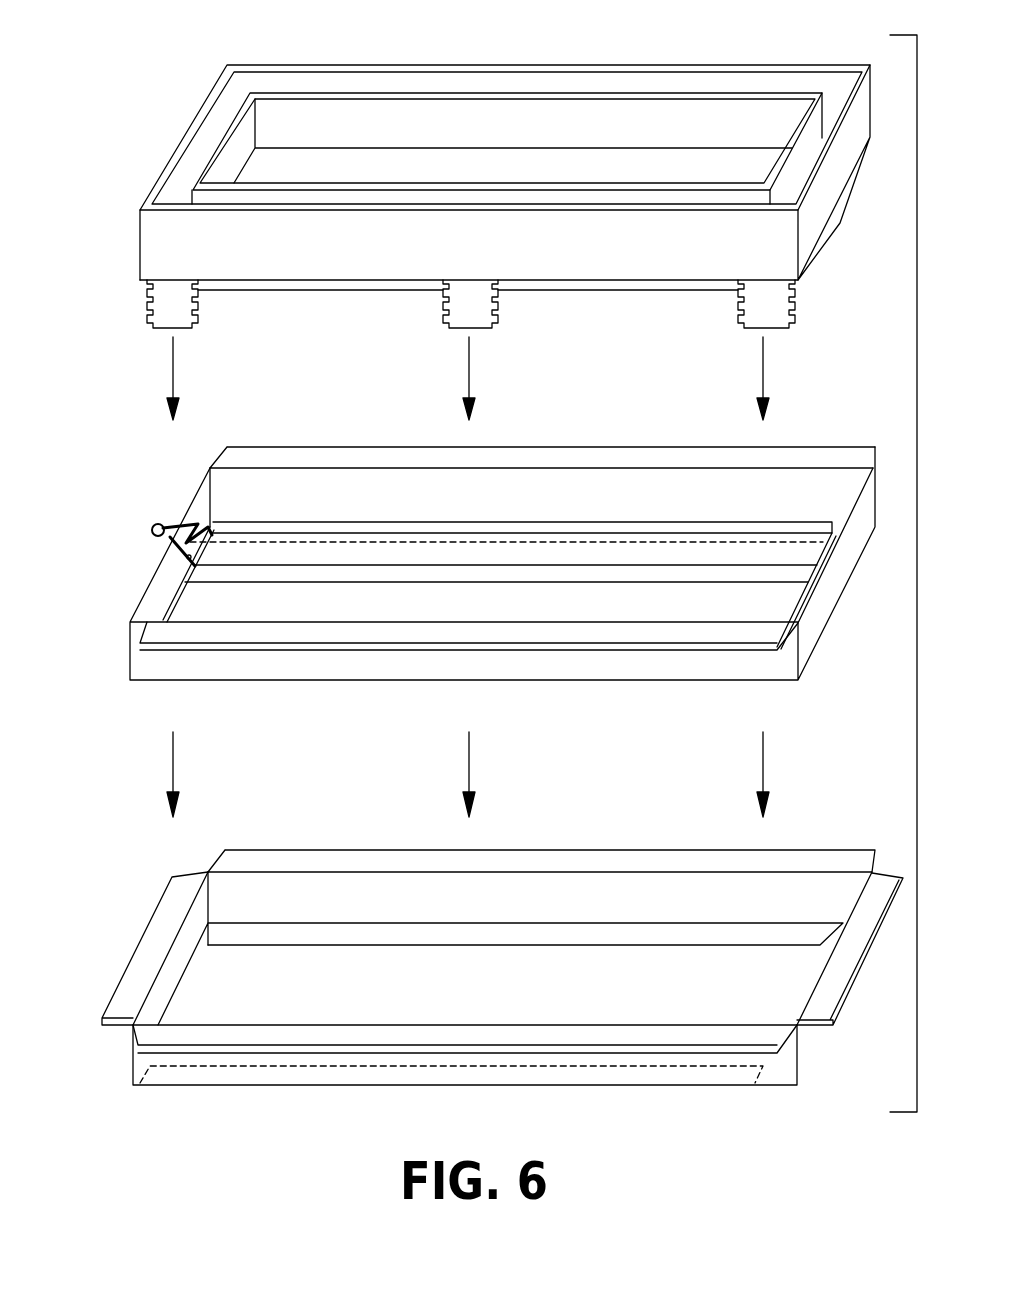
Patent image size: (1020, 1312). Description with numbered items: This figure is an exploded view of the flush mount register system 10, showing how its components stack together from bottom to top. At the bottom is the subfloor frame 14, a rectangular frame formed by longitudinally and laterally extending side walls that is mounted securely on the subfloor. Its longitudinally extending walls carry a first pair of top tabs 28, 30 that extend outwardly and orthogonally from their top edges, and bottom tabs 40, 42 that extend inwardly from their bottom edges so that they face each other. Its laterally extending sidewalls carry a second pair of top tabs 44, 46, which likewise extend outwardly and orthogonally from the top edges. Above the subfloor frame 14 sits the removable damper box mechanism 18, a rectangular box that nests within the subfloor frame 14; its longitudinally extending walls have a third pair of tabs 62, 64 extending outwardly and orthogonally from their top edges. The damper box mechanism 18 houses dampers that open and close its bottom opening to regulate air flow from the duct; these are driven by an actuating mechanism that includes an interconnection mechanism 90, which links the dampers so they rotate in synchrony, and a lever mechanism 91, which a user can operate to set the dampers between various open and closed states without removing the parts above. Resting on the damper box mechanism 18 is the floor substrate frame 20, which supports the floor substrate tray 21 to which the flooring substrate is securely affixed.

The flush mount register system 10 is at (962, 559).
The subfloor frame 14 is at (102, 1062).
The removable damper box mechanism 18 is at (102, 658).
The floor substrate frame 20 is at (112, 243).
The floor substrate tray 21 is at (570, 100).
The top tab 28 is at (472, 860).
The top tab 30 is at (317, 1035).
The bottom tab 40 is at (318, 525).
The bottom tab 42 is at (560, 1073).
The top tab 44 is at (152, 945).
The top tab 46 is at (875, 897).
The tab 62 is at (562, 458).
The tab 64 is at (315, 632).
The interconnection mechanism 90 is at (813, 580).
The lever mechanism 91 is at (162, 523).